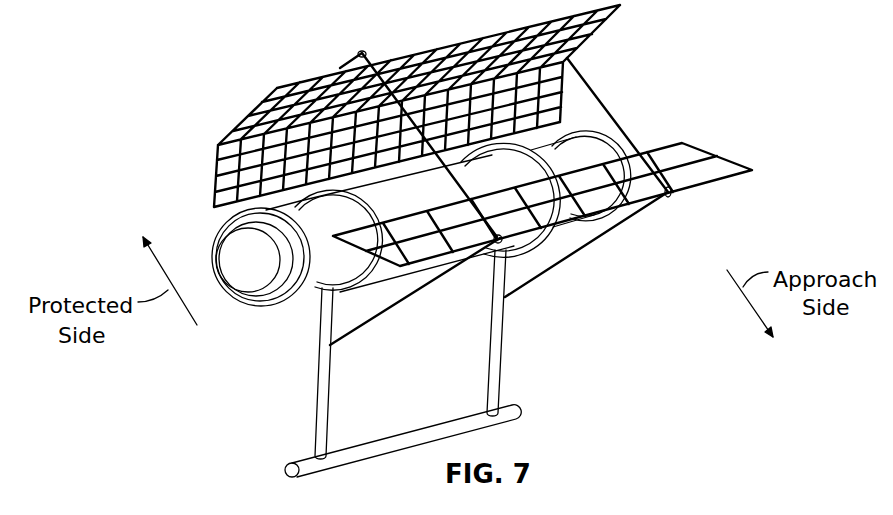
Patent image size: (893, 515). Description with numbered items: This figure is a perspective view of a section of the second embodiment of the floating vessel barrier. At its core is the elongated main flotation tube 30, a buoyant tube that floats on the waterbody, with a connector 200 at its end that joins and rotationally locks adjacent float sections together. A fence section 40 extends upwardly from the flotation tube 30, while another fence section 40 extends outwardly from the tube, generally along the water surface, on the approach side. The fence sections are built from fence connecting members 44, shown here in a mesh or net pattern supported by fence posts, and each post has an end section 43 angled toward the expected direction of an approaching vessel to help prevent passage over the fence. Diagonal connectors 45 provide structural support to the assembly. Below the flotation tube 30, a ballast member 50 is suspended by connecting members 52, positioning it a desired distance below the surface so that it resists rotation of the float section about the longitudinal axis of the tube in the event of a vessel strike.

The main flotation tube 30 is at (320, 272).
The fence section 40 is at (205, 176).
The end section 43 is at (362, 53).
The fence connecting members 44 is at (254, 110).
The diagonal connectors 45 is at (378, 318).
The ballast member 50 is at (287, 468).
The connecting members 52 is at (318, 420).
The connectors 200 is at (243, 272).